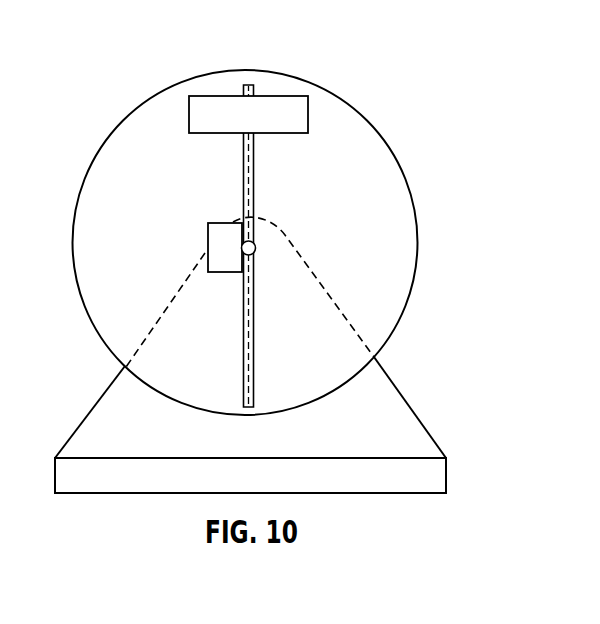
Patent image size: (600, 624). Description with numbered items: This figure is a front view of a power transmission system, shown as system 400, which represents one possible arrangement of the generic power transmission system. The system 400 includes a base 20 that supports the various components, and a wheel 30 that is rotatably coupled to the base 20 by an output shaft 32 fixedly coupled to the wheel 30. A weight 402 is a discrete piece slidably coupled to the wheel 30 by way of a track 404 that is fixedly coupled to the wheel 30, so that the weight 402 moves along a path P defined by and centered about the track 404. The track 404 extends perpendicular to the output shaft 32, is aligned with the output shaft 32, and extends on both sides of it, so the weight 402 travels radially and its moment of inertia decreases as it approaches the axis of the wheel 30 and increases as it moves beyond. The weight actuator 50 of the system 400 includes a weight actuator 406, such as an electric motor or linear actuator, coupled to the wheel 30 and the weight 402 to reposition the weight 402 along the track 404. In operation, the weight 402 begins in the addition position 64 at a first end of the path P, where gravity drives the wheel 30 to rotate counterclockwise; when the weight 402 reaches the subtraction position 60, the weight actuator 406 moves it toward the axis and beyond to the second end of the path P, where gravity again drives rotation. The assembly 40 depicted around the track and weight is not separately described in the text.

The system 400 is at (285, 248).
The calibration assembly 40 is at (263, 209).
The addition position 64 is at (220, 91).
The weight 402 is at (300, 117).
The track 404 is at (250, 180).
The weight actuator 406 is at (222, 273).
The weight actuator 50 is at (250, 270).
The output shaft 32 is at (256, 246).
The wheel 30 is at (403, 226).
The subtraction position 60 is at (232, 386).
The path P is at (250, 360).
The base 20 is at (408, 432).